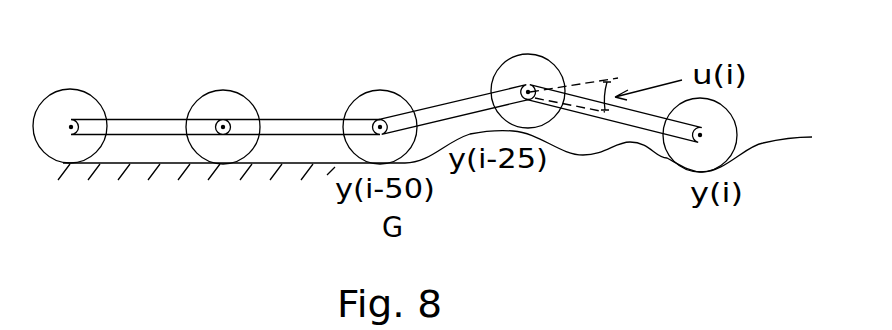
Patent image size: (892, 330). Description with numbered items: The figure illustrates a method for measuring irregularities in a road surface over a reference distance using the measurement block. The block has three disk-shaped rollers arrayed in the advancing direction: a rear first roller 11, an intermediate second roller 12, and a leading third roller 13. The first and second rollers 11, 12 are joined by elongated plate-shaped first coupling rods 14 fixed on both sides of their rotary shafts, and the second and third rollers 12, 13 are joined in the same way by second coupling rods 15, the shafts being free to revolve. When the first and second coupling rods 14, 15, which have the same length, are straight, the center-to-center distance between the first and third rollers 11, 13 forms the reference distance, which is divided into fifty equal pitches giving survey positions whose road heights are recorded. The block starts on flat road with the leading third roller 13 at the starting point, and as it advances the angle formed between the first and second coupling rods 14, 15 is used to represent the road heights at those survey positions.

The first roller 11 is at (70, 92).
The second roller 12 is at (223, 90).
The third roller 13 is at (368, 90).
The first coupling rod 14 is at (152, 120).
The second coupling rod 15 is at (297, 120).